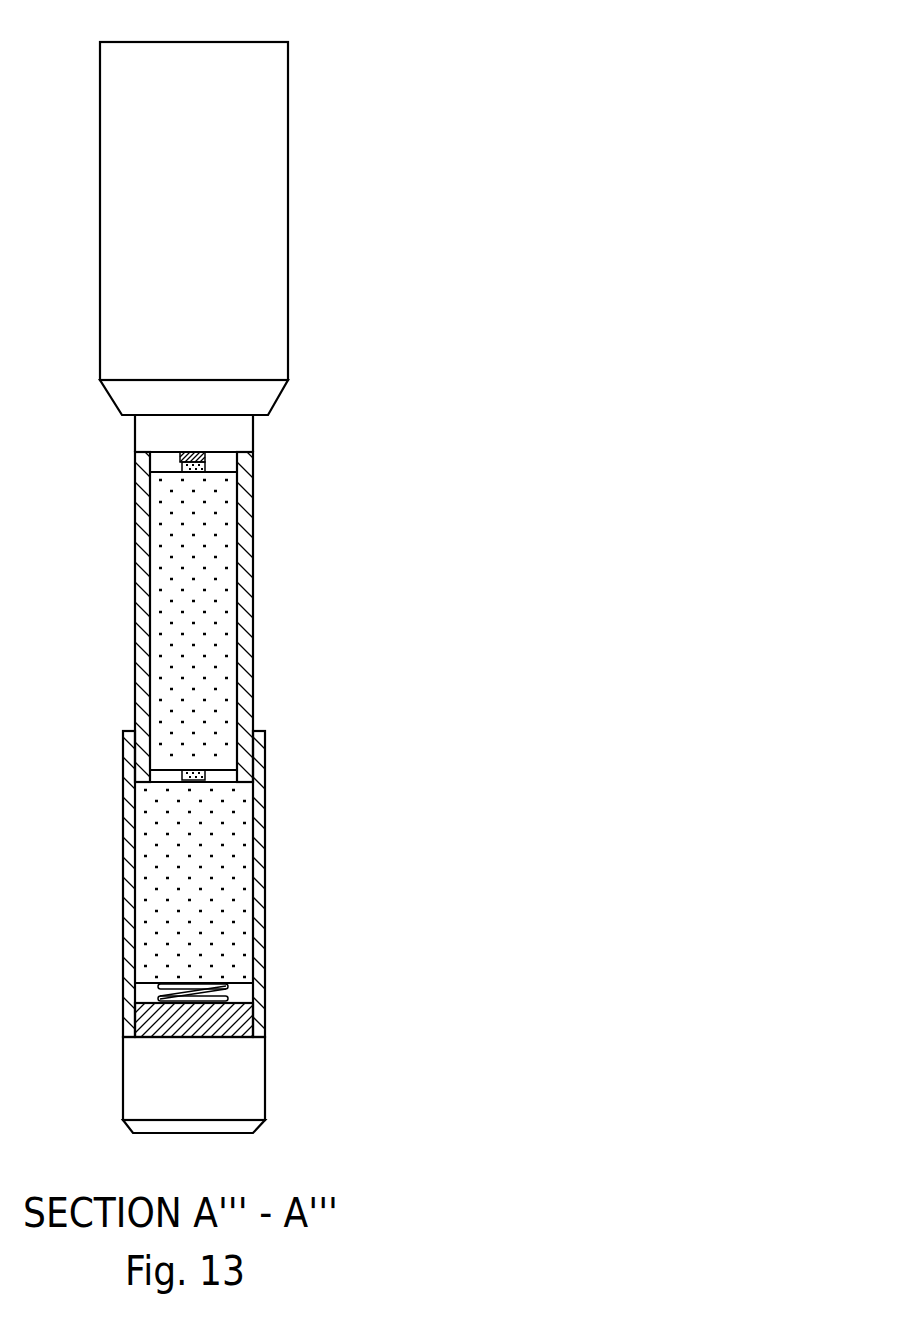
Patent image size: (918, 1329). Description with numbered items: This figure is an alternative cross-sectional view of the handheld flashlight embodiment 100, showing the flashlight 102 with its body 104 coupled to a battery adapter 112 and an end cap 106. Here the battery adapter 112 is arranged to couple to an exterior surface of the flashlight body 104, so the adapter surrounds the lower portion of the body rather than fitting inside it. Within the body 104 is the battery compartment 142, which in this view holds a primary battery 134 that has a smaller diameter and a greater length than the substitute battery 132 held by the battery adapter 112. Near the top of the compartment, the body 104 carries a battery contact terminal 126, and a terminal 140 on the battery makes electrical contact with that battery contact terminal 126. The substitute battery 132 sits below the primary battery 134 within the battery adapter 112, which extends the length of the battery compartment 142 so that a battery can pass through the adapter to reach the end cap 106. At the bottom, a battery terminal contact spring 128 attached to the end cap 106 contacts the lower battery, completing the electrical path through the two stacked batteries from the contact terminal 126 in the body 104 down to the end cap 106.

The handheld flashlight embodiment 100 is at (460, 42).
The flashlight 102 is at (100, 155).
The body 104 is at (135, 565).
The end cap 106 is at (123, 1068).
The battery adapter 112 is at (123, 773).
The battery contact terminal 126 is at (180, 458).
The battery terminal contact spring 128 is at (235, 998).
The substitute battery 132 is at (219, 859).
The primary battery 134 is at (222, 619).
The terminal 140 is at (207, 470).
The battery compartment 142 is at (142, 440).